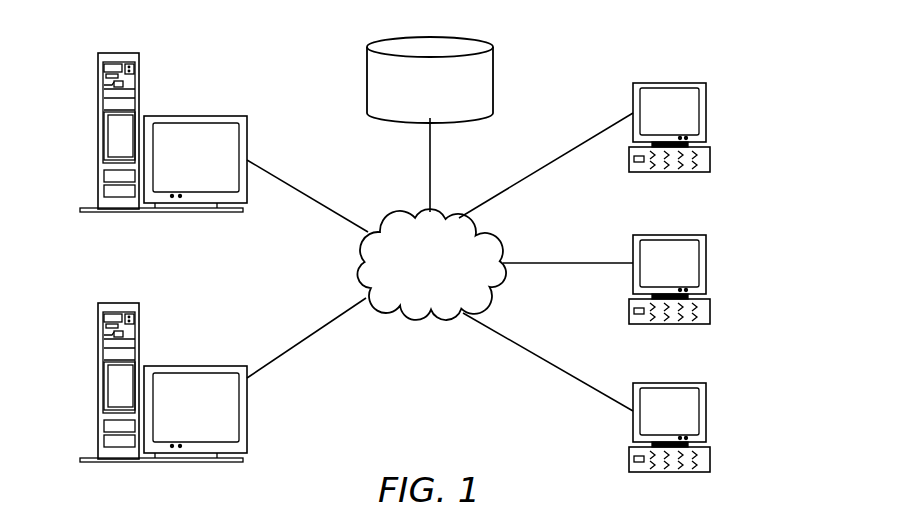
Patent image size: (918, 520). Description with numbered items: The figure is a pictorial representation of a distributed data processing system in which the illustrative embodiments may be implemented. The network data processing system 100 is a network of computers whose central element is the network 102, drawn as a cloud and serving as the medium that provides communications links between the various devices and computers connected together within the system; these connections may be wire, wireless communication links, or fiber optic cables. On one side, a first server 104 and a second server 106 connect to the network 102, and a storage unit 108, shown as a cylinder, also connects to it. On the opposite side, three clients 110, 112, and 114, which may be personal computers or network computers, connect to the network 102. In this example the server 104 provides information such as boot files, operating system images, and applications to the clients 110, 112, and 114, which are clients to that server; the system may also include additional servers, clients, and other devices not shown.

The network data processing system 100 is at (287, 59).
The network 102 is at (428, 317).
The server 104 is at (98, 131).
The server 106 is at (98, 381).
The storage unit 108 is at (493, 79).
The client 110 is at (706, 112).
The client 112 is at (706, 264).
The client 114 is at (706, 417).